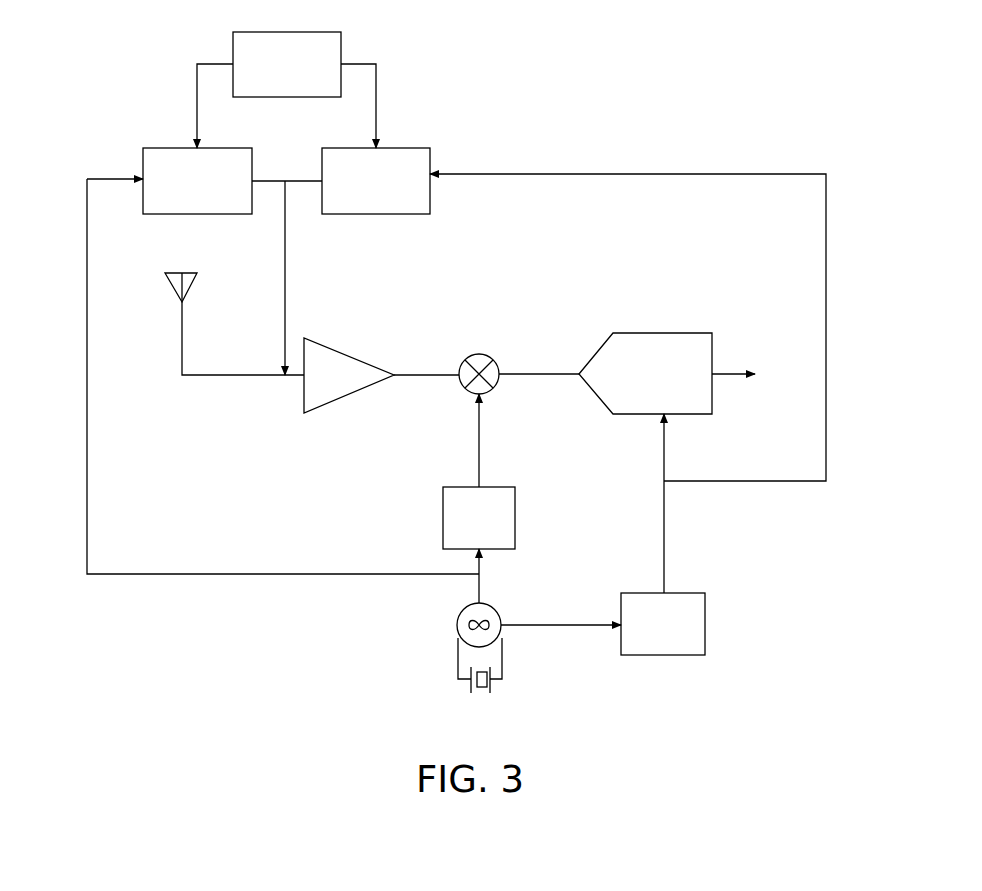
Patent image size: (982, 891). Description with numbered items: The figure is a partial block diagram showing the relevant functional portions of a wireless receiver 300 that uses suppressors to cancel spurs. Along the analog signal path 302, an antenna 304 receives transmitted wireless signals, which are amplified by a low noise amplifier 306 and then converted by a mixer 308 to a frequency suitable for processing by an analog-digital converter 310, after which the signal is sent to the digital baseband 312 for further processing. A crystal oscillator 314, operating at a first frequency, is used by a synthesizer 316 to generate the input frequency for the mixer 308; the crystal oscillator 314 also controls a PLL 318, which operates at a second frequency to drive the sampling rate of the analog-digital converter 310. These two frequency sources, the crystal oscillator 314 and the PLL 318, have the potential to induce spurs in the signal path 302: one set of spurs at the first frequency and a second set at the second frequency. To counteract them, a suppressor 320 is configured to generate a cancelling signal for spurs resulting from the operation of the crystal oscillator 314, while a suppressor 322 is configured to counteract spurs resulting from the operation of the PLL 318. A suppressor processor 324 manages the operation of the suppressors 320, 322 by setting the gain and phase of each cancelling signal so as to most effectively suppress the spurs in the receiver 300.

The wireless receiver 300 is at (580, 92).
The analog signal path 302 is at (433, 377).
The antenna 304 is at (195, 273).
The low noise amplifier 306 is at (349, 375).
The mixer 308 is at (478, 355).
The analog-digital converter 310 is at (645, 373).
The digital baseband 312 is at (754, 374).
The crystal oscillator 314 is at (457, 617).
The synthesizer 316 is at (479, 518).
The PLL 318 is at (663, 624).
The suppressor 320 is at (197, 181).
The suppressor 322 is at (376, 181).
The suppressor processor 324 is at (287, 64).